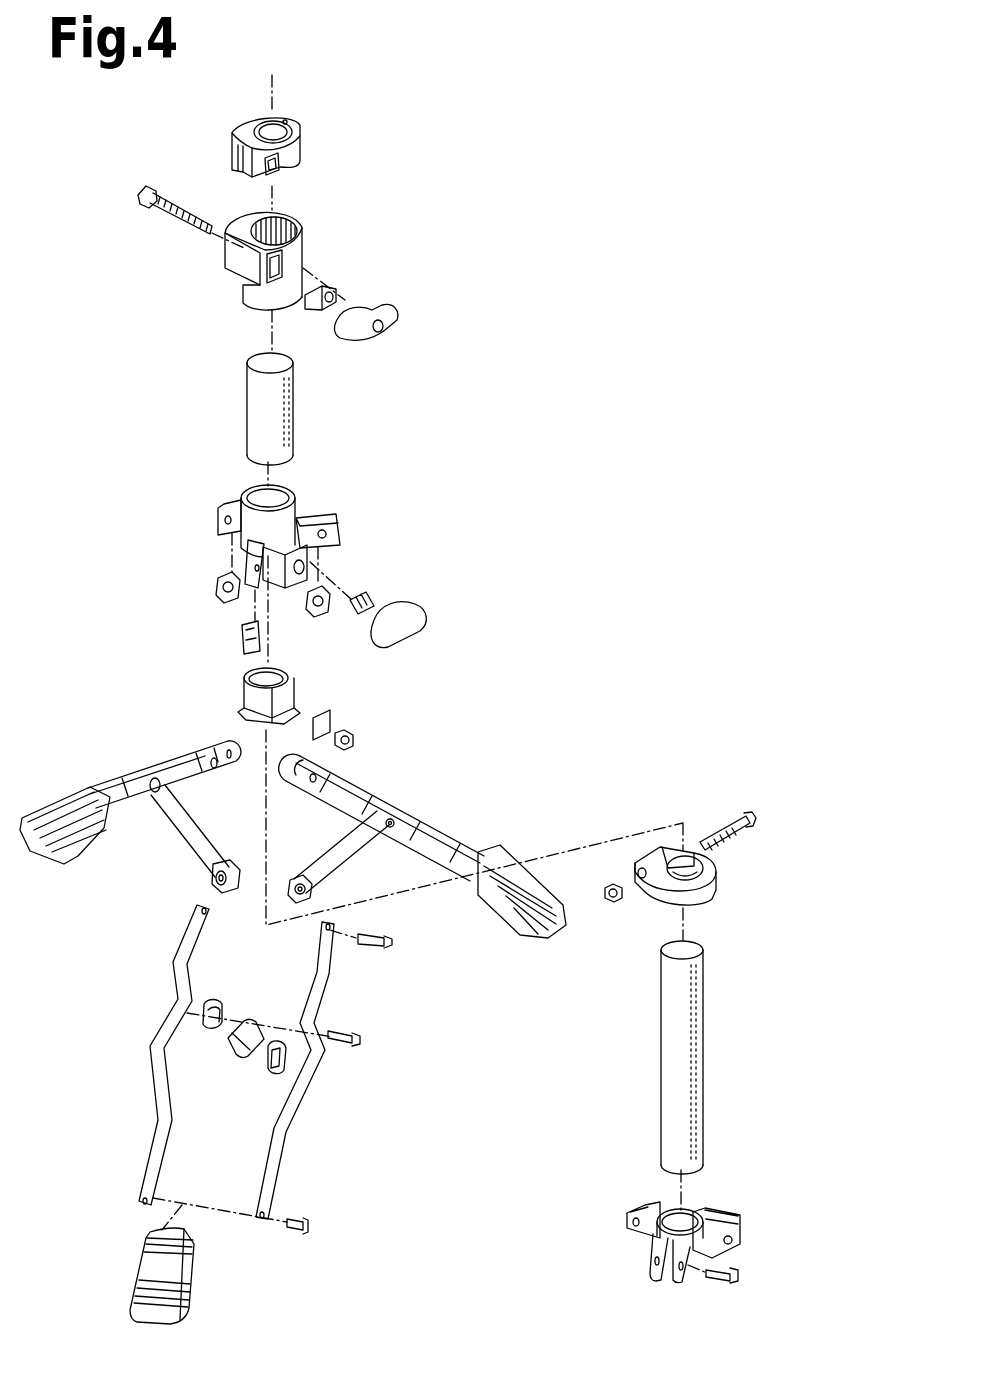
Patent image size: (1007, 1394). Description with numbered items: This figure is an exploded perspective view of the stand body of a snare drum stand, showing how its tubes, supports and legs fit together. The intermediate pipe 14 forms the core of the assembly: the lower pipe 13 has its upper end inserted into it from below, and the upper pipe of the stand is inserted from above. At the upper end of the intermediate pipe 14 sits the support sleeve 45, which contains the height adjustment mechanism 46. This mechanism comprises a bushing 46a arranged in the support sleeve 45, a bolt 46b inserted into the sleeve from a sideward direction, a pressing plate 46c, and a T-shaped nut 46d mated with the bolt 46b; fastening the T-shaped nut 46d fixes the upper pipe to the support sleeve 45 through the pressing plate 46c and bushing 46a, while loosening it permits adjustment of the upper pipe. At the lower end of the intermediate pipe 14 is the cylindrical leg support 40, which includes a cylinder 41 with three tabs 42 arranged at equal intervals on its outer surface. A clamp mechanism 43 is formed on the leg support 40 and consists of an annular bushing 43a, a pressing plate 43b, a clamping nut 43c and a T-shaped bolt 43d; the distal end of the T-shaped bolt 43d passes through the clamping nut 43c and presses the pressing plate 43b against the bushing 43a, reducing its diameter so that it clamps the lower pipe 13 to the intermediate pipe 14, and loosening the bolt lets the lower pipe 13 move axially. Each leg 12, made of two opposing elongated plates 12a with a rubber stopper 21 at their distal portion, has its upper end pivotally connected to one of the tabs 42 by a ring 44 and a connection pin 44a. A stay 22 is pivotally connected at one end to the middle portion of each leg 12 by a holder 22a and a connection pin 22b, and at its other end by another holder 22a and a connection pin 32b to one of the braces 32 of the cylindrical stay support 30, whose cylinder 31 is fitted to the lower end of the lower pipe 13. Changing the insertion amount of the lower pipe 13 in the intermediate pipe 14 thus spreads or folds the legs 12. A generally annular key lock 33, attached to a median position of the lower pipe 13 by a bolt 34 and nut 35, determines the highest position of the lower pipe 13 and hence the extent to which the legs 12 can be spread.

The leg 12 is at (168, 758).
The elongated plate 12a is at (112, 800).
The lower pipe 13 is at (705, 1050).
The intermediate pipe 14 is at (246, 392).
The rubber stopper 21 is at (76, 860).
The stay 22 is at (247, 1028).
The holder 22a is at (236, 864).
The connection pin 22b is at (157, 792).
The stay support 30 is at (702, 1194).
The cylinder 31 is at (680, 1192).
The brace 32 is at (742, 1224).
The connection pin 32b is at (738, 1278).
The key lock 33 is at (714, 900).
The bolt 34 is at (746, 815).
The nut 35 is at (614, 903).
The leg support 40 is at (302, 486).
The cylinder 41 is at (252, 488).
The tab 42 is at (325, 514).
The clamp mechanism 43 is at (450, 580).
The bushing 43a is at (295, 690).
The pressing plate 43b is at (333, 716).
The clamping nut 43c is at (357, 742).
The T-shaped bolt 43d is at (420, 632).
The ring 44 is at (240, 630).
The connection pin 44a is at (394, 942).
The support sleeve 45 is at (305, 238).
The height adjustment mechanism 46 is at (396, 207).
The bushing 46a is at (308, 150).
The bolt 46b is at (182, 196).
The pressing plate 46c is at (338, 288).
The T-shaped nut 46d is at (398, 306).